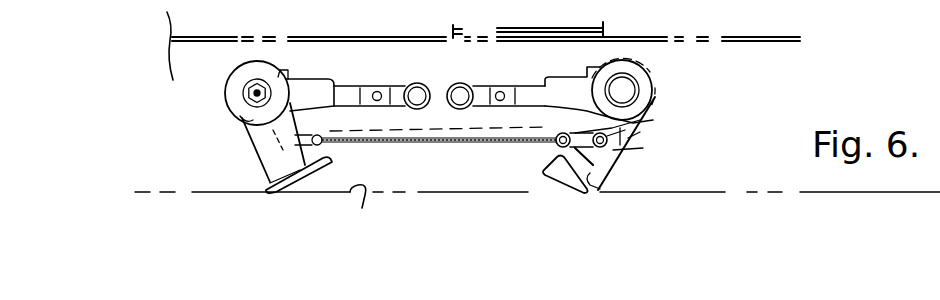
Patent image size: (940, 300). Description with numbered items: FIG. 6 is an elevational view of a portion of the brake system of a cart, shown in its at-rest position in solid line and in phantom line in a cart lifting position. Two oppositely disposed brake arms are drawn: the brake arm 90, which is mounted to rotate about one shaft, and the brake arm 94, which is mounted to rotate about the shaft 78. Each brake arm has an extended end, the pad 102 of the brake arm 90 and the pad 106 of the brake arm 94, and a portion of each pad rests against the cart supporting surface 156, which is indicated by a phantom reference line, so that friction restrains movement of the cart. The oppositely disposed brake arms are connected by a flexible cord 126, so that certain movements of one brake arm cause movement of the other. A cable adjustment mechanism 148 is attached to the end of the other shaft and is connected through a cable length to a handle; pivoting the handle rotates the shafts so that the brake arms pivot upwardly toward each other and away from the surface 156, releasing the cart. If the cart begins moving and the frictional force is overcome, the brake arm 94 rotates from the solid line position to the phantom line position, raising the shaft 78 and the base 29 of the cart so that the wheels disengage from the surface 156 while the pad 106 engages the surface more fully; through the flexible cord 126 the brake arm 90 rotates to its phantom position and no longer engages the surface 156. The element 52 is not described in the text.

The base 29 is at (466, 30).
The cable adjustment mechanism 148 is at (243, 83).
The shaft 78 is at (643, 90).
The brake arm 90 is at (267, 155).
The flexible cord 126 is at (440, 143).
The brake arm 94 is at (643, 127).
The pad 102 is at (261, 195).
The cart supporting surface 156 is at (367, 208).
The pad 106 is at (558, 173).
The member 52 is at (648, 176).